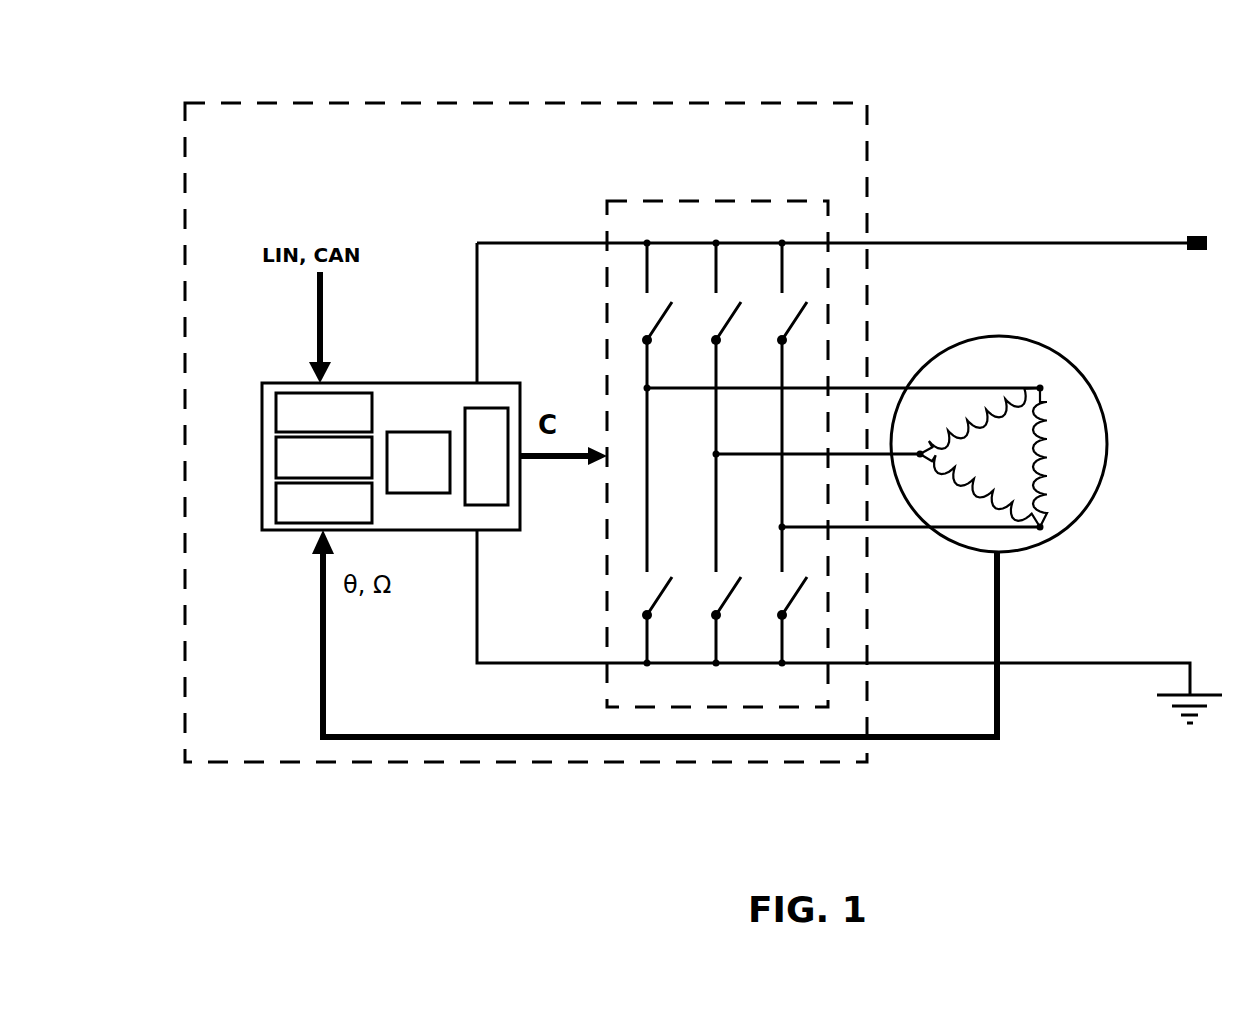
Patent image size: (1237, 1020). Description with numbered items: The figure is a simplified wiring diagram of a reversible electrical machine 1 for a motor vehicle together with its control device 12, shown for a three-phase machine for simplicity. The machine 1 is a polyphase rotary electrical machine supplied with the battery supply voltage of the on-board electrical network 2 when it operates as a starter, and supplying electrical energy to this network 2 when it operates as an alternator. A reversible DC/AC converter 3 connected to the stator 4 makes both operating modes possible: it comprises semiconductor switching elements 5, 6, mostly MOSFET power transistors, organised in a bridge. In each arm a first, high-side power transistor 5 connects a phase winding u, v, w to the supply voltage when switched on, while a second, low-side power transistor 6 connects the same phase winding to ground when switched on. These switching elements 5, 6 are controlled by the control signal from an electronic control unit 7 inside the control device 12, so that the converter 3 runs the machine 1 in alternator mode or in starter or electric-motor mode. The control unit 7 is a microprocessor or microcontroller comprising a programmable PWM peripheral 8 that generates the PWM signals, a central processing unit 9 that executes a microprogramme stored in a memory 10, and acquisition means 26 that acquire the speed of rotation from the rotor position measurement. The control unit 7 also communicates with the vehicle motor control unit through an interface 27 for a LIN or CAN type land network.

The reversible electrical machine 1 is at (951, 140).
The on-board electrical network 2 is at (1060, 246).
The reversible DC/AC converter 3 is at (745, 186).
The stator 4 is at (1050, 540).
The first power transistor 5 is at (661, 325).
The second power transistor 6 is at (662, 600).
The electronic control unit 7 is at (430, 369).
The PWM peripheral 8 is at (470, 428).
The central processing unit 9 is at (410, 472).
The memory 10 is at (292, 456).
The control device 12 is at (556, 88).
The acquisition means 26 is at (293, 504).
The interface 27 is at (303, 407).